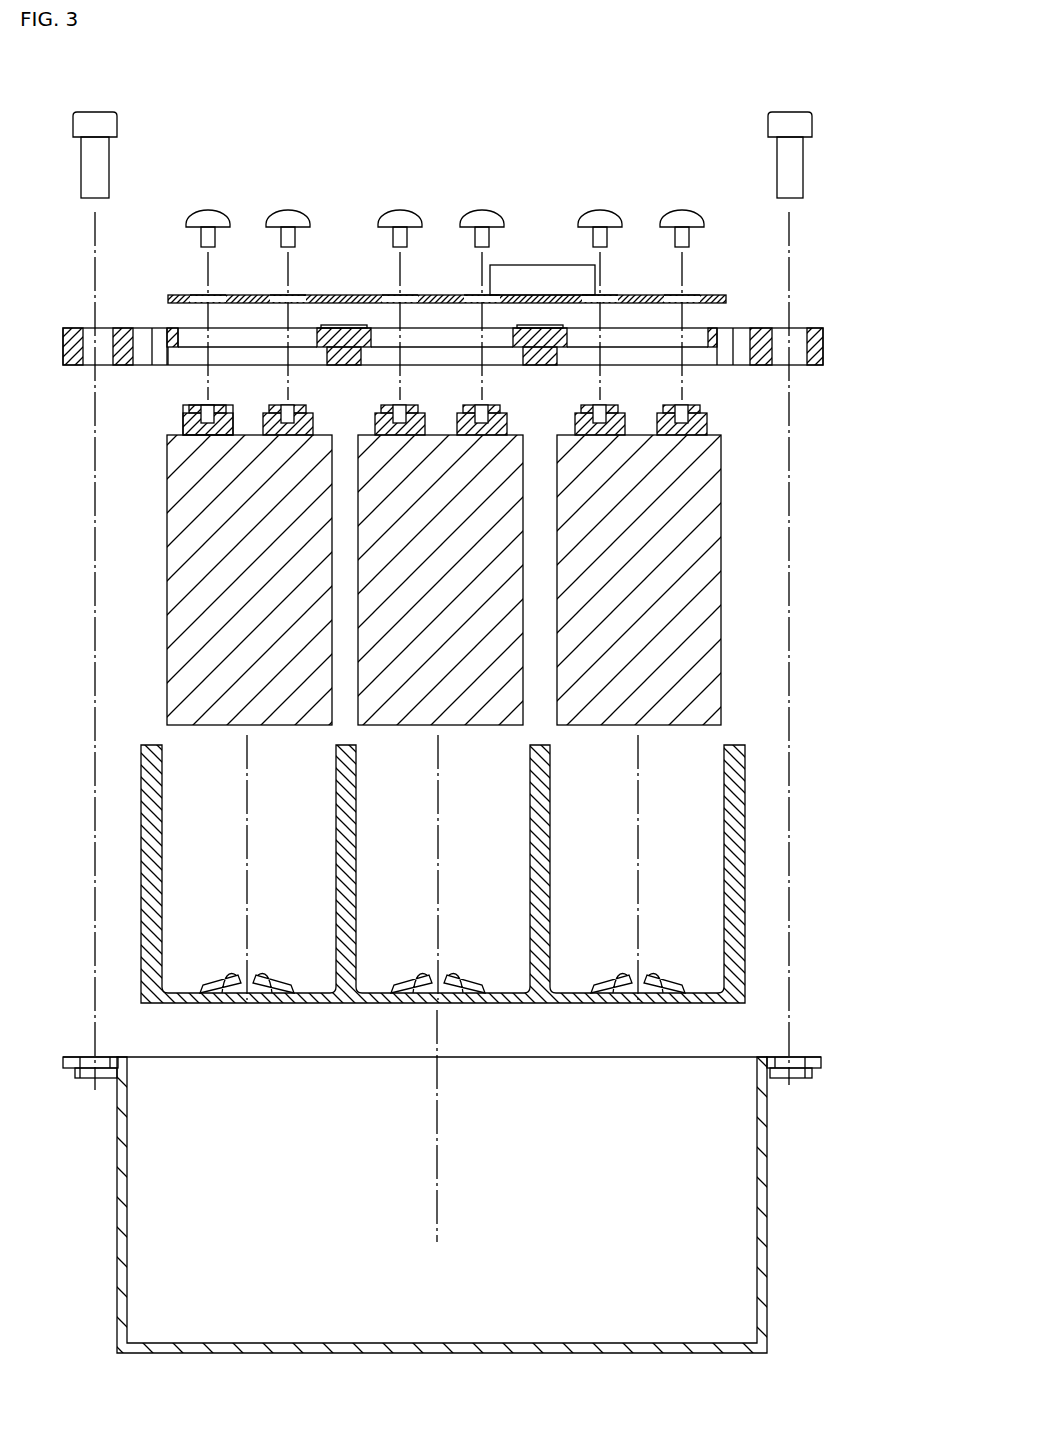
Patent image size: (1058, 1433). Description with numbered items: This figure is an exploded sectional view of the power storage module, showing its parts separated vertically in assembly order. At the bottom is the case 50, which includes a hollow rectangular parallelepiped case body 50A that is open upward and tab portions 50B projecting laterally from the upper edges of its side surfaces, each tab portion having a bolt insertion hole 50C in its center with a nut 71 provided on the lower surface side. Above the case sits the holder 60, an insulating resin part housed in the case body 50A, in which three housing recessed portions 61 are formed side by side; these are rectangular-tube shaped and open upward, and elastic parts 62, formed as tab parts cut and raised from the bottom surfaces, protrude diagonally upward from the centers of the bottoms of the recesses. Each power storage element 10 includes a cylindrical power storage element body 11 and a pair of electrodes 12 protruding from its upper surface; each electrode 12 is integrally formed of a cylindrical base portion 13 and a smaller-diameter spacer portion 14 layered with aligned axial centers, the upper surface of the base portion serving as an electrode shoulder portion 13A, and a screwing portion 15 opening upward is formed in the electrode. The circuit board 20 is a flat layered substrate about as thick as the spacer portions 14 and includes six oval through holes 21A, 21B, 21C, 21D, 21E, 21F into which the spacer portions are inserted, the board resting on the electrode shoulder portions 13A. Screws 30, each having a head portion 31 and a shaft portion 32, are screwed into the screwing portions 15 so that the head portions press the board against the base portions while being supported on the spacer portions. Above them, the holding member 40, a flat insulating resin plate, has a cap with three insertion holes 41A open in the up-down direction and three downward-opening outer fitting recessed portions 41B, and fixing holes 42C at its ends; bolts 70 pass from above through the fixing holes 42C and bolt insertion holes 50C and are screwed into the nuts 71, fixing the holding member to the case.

The power storage element 10 is at (515, 551).
The power storage element body 11 is at (722, 552).
The electrode 12 is at (495, 423).
The base portion 13 is at (708, 426).
The electrode shoulder portion 13A is at (183, 410).
The spacer portion 14 is at (700, 408).
The screwing portion 15 is at (674, 406).
The circuit board 20 is at (475, 271).
The through hole 21A is at (220, 295).
The through hole 21B is at (300, 295).
The through hole 21C is at (412, 295).
The through hole 21D is at (494, 295).
The through hole 21E is at (612, 295).
The through hole 21F is at (693, 295).
The screw 30 is at (401, 228).
The head portion 31 is at (196, 219).
The shaft portion 32 is at (416, 244).
The holding member 40 is at (473, 325).
The insertion hole 41A is at (186, 340).
The outer fitting recessed portion 41B is at (184, 356).
The fixing hole 42C is at (803, 343).
The case 50 is at (484, 1185).
The case body 50A is at (770, 1160).
The tab portion 50B is at (772, 1056).
The bolt insertion hole 50C is at (800, 1060).
The holder 60 is at (451, 898).
The housing recessed portion 61 is at (163, 882).
The elastic part 62 is at (255, 992).
The bolt 70 is at (94, 110).
The nut 71 is at (78, 1078).